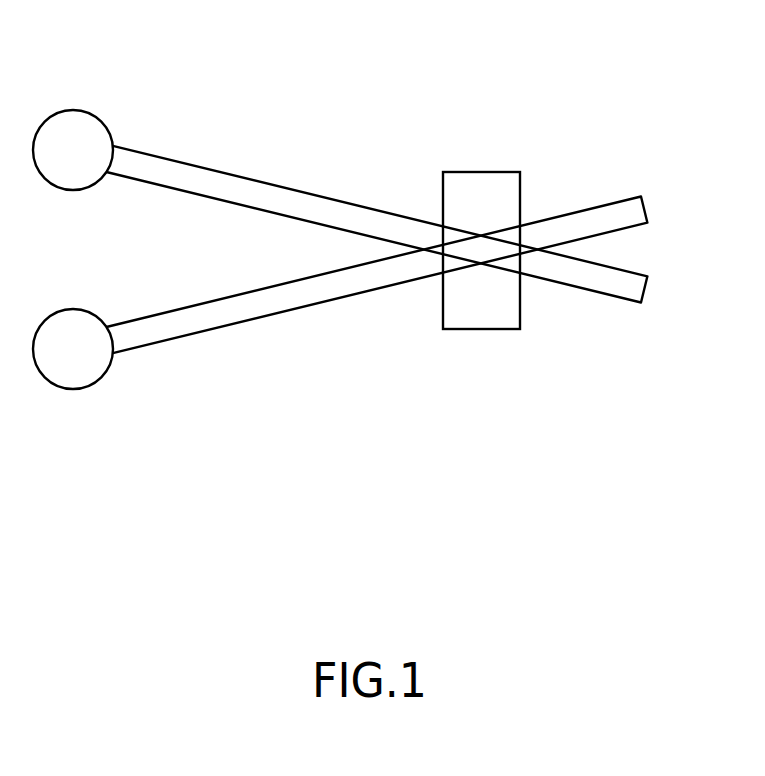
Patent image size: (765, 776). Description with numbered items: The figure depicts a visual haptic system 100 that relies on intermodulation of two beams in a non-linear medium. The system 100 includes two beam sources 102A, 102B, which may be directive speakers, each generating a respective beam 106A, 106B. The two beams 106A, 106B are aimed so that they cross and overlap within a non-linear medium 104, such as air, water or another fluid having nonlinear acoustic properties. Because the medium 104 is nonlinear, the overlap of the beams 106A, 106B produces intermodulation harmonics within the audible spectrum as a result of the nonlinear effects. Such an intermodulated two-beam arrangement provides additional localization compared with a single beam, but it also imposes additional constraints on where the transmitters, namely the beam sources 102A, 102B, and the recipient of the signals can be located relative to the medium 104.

The visual haptic system 100 is at (573, 75).
The beam source 102A is at (97, 130).
The beam source 102B is at (92, 358).
The non-linear medium 104 is at (510, 193).
The beam 106A is at (245, 188).
The beam 106B is at (252, 305).